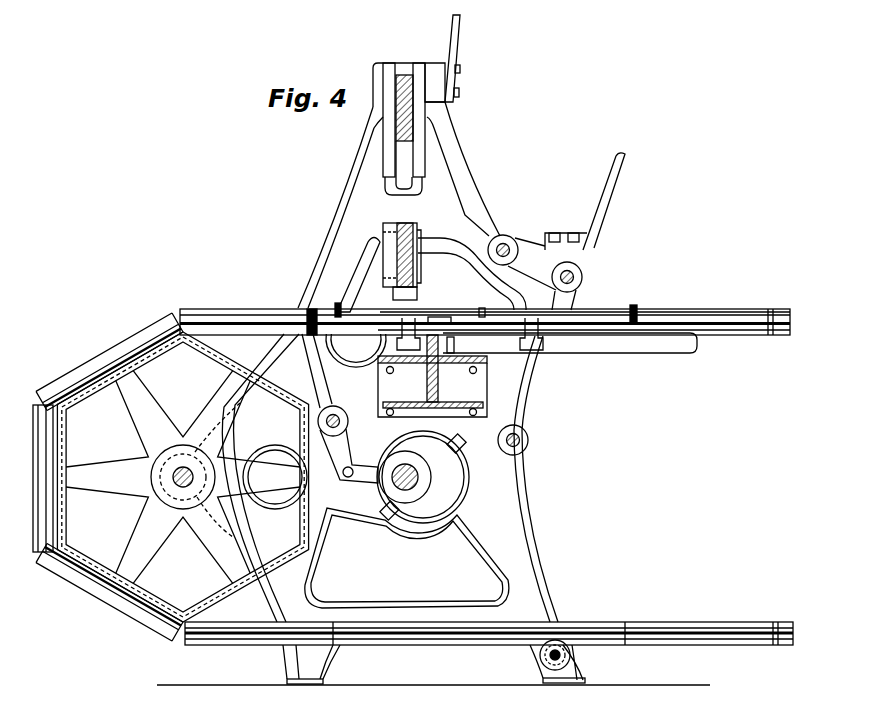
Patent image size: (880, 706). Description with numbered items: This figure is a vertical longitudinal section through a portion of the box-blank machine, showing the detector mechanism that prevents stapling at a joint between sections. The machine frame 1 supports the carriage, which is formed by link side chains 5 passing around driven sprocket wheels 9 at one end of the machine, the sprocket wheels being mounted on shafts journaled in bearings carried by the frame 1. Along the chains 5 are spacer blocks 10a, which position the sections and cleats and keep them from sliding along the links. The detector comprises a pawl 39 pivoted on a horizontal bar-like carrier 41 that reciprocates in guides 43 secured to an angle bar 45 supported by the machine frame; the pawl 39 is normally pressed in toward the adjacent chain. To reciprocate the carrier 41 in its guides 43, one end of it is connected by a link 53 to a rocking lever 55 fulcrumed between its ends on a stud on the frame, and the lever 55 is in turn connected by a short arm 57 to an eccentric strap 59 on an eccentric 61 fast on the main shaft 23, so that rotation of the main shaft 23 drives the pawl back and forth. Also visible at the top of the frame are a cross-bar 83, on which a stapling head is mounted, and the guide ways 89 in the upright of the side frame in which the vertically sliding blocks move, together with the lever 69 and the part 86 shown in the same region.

The frame 1 is at (514, 497).
The link side chains 5 is at (102, 362).
The driven sprocket wheels 9 is at (58, 435).
The hooks 10a is at (660, 299).
The main shaft 23 is at (407, 490).
The pawl 39 is at (444, 318).
The carrier 41 is at (357, 318).
The guides 43 is at (410, 322).
The angle bar 45 is at (593, 348).
The link 53 is at (309, 309).
The rocking lever 55 is at (328, 390).
The short arm 57 is at (368, 466).
The eccentric strap 59 is at (464, 475).
The eccentric 61 is at (453, 494).
The lever 69 is at (452, 34).
The cross-bar 83 is at (410, 228).
The slider 86 is at (398, 100).
The guide ways 89 is at (432, 106).